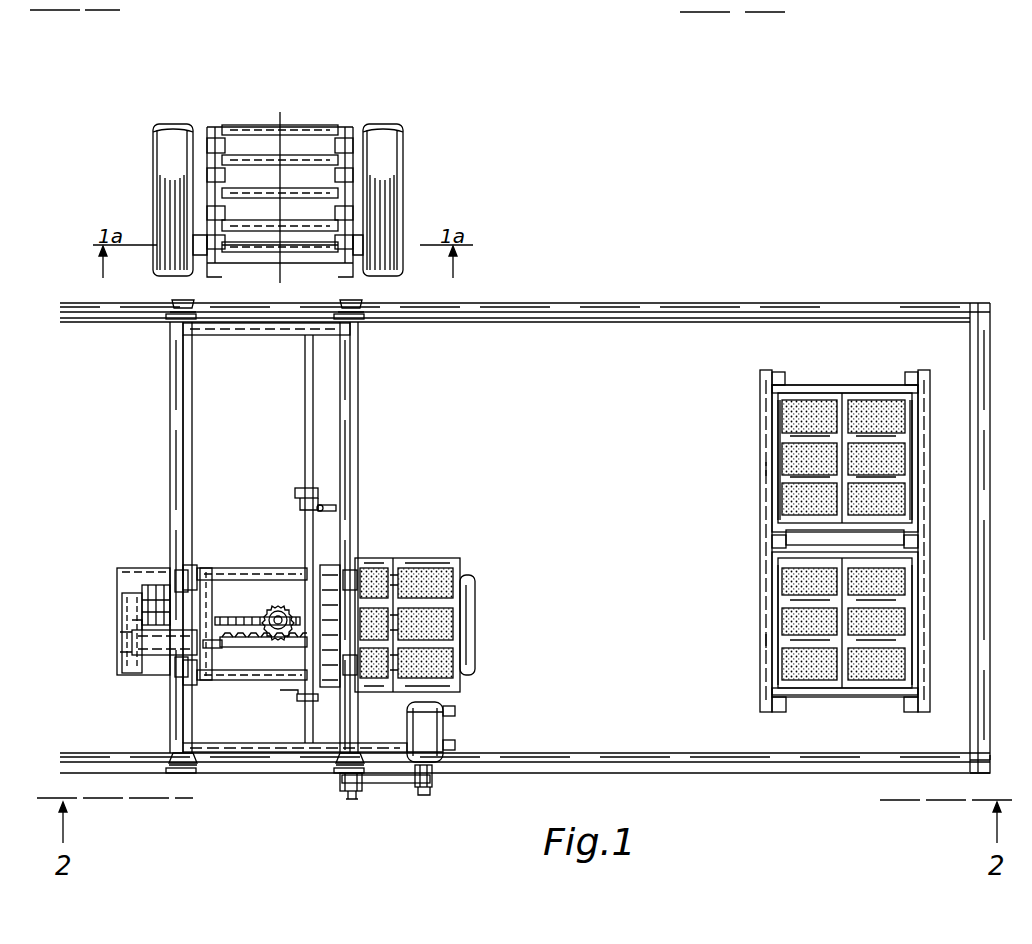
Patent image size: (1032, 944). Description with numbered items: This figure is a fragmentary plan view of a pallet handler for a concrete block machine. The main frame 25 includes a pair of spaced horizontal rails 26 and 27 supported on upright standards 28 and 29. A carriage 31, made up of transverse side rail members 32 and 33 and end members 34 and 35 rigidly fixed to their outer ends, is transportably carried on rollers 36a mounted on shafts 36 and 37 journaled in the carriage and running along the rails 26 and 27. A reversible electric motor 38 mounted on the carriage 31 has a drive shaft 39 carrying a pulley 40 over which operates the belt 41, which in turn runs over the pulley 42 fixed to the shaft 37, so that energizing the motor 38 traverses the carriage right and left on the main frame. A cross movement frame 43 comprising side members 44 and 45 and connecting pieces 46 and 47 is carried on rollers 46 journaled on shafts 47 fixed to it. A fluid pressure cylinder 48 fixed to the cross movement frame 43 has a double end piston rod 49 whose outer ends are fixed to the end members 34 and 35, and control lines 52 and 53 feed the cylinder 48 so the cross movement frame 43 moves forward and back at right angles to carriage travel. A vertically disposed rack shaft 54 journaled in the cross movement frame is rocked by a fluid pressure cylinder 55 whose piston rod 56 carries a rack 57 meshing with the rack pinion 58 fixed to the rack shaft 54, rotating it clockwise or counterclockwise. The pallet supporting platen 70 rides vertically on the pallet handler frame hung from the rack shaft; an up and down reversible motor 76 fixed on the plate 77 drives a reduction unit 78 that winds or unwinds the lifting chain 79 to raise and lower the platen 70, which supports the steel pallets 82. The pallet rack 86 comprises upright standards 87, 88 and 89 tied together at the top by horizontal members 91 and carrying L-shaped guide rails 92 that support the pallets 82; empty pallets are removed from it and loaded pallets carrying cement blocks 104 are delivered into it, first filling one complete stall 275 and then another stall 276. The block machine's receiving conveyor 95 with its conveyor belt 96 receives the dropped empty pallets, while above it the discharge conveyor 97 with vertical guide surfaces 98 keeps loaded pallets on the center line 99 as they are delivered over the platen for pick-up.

The main frame 25 is at (612, 306).
The horizontal rail 26 is at (541, 322).
The horizontal rail 27 is at (572, 752).
The upright standard 28 is at (982, 303).
The upright standard 29 is at (992, 775).
The carriage 31 is at (358, 493).
The transverse side rail member 32 is at (173, 398).
The transverse side rail member 33 is at (358, 406).
The end member 34 is at (241, 334).
The end member 35 is at (206, 746).
The shaft 36 is at (338, 776).
The roller 36a is at (172, 322).
The shaft 37 is at (352, 798).
The reversible electric motor 38 is at (458, 730).
The drive shaft 39 is at (424, 794).
The pulley 40 is at (434, 784).
The belt 41 is at (389, 783).
The pulley 42 is at (343, 792).
The cross movement frame 43 is at (252, 567).
The side member 44 is at (230, 568).
The side member 45 is at (244, 680).
The connecting piece 46 is at (180, 570).
The connecting piece 47 is at (192, 564).
The fluid pressure cylinder 48 is at (304, 520).
The double end piston rod 49 is at (305, 432).
The control line 52 is at (322, 504).
The control line 53 is at (292, 698).
The rack shaft 54 is at (274, 616).
The fluid pressure cylinder 55 is at (140, 654).
The piston rod 56 is at (212, 646).
The rack 57 is at (264, 646).
The rack pinion 58 is at (278, 607).
The pallet supporting platen 70 is at (480, 618).
The up and down movement reversible motor 76 is at (122, 628).
The plate 77 is at (116, 584).
The reduction unit 78 is at (144, 588).
The lifting chain 79 is at (224, 618).
The steel pallet 82 is at (394, 566).
The pallet rack 86 is at (758, 556).
The upright standard 87 is at (900, 379).
The upright standard 88 is at (772, 540).
The upright standard 89 is at (896, 705).
The horizontal member 91 is at (772, 411).
The L-shaped guide rail 92 is at (824, 382).
The receiving conveyor 95 is at (283, 232).
The conveyor belt 96 is at (324, 184).
The discharge conveyor 97 is at (372, 190).
The guide surface 98 is at (212, 193).
The center line 99 is at (294, 113).
The cement block 104 is at (440, 646).
The stall 275 is at (770, 473).
The stall 276 is at (770, 644).